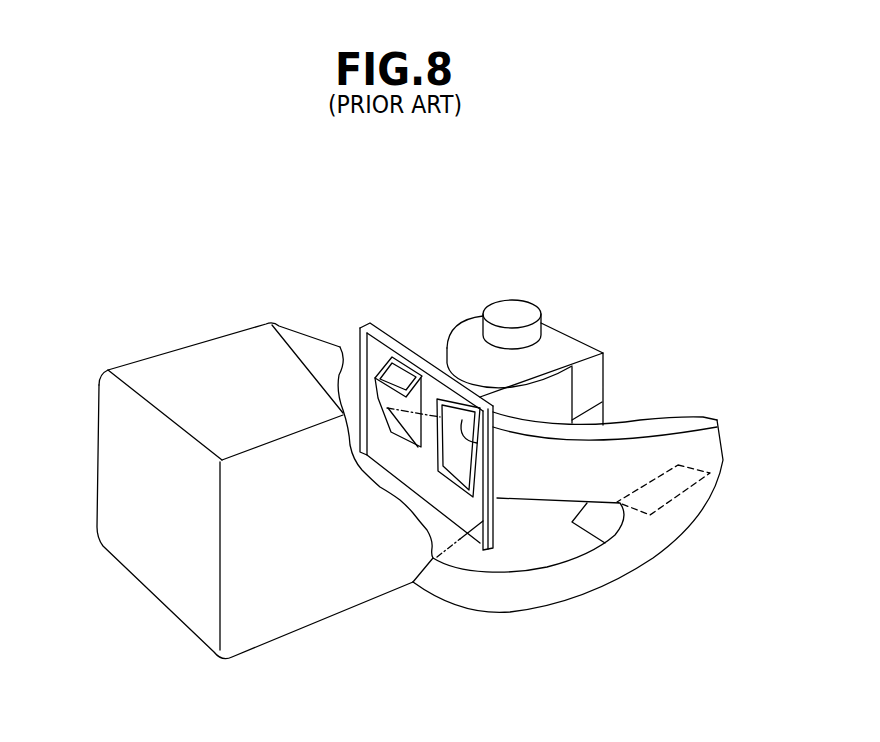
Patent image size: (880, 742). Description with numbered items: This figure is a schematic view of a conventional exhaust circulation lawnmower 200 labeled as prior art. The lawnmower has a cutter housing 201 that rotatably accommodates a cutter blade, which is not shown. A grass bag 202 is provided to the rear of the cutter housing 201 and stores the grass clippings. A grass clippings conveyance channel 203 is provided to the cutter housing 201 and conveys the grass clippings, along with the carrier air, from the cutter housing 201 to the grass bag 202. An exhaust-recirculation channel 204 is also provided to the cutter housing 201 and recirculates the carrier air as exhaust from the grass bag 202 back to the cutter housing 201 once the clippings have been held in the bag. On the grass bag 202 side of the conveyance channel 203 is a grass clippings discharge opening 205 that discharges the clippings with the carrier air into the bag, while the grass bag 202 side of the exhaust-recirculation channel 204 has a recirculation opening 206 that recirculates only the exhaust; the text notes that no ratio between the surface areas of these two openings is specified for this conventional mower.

The exhaust circulation lawnmower 200 is at (195, 128).
The cutter housing 201 is at (435, 320).
The grass bag 202 is at (217, 313).
The grass clippings conveyance channel 203 is at (623, 428).
The exhaust-recirculation channel 204 is at (355, 330).
The grass clippings discharge opening 205 is at (480, 402).
The recirculation opening 206 is at (378, 332).